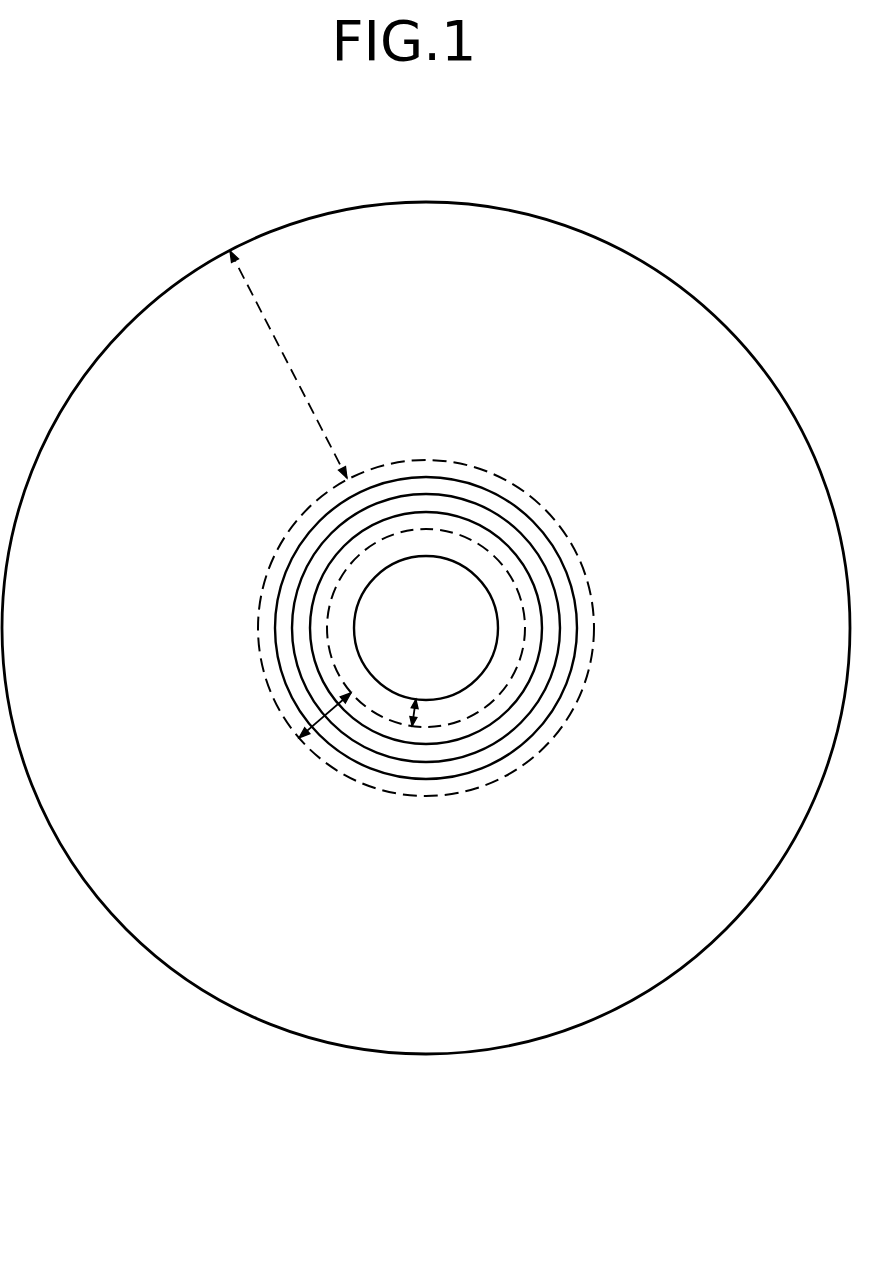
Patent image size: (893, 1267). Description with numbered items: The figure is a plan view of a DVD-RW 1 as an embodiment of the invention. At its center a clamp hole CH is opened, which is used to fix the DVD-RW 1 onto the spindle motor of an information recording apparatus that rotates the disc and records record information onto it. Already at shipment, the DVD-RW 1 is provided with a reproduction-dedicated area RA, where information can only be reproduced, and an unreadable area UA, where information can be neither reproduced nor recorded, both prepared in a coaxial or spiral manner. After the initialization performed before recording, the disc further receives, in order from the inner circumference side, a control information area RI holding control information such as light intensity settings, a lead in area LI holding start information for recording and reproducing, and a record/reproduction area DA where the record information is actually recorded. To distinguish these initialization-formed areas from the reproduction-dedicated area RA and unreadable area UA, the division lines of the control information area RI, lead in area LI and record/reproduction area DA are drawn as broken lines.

The DVD-RW 1 is at (607, 1017).
The record/reproduction area DA is at (263, 313).
The unreadable area UA is at (495, 500).
The reproduction-dedicated area RA is at (523, 542).
The clamp hole CH is at (452, 644).
The lead in area LI is at (325, 715).
The control information area RI is at (418, 712).